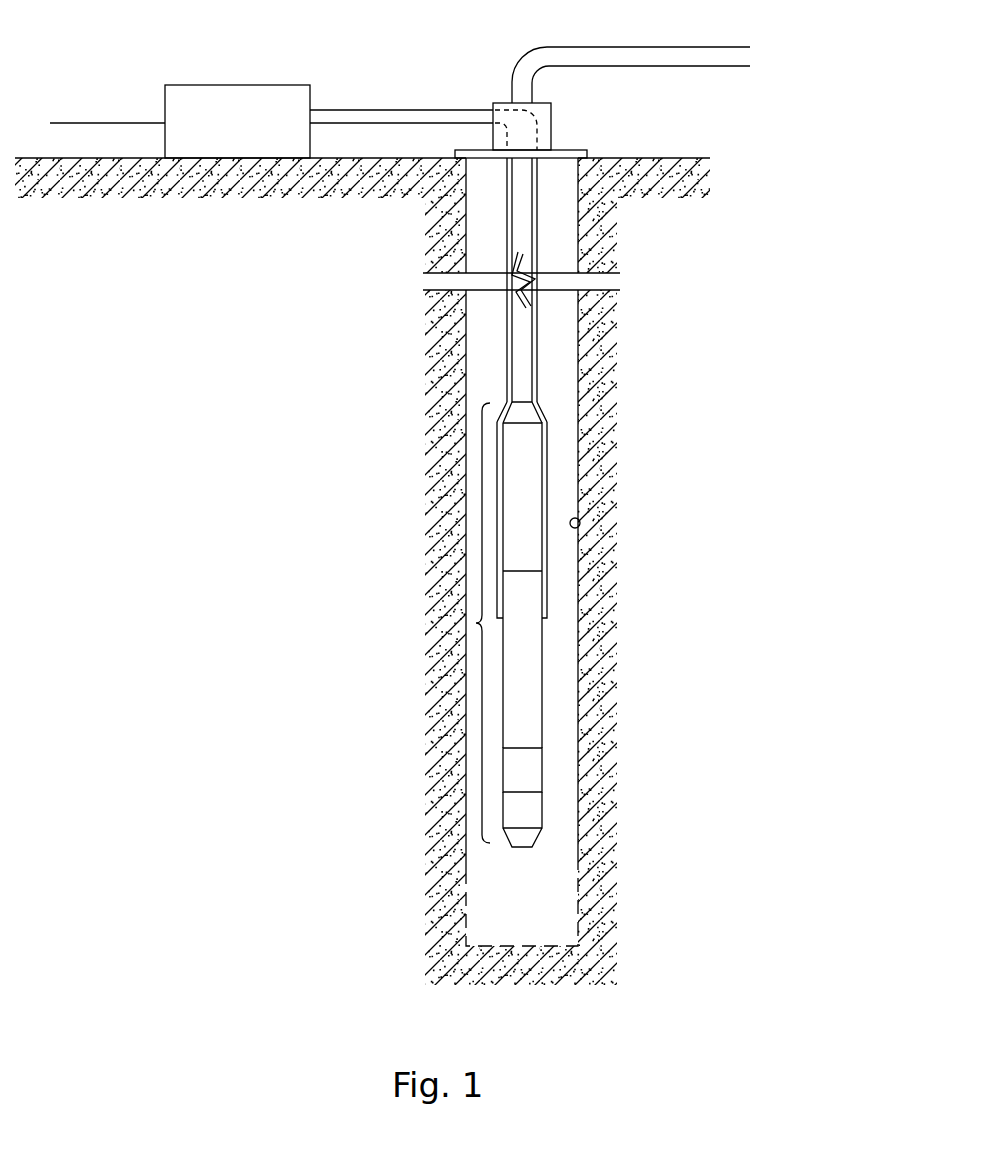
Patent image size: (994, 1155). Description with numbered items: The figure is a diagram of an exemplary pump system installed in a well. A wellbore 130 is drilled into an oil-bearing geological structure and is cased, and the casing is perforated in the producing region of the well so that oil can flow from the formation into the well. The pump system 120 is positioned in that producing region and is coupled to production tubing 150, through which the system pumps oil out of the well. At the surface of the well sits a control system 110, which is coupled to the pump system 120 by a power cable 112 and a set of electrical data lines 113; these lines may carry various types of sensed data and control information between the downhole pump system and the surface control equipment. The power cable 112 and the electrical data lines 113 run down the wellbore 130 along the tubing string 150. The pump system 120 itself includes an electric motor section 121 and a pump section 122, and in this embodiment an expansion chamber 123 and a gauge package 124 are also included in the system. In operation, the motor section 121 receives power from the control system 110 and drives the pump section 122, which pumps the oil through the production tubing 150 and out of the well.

The control system 110 is at (239, 85).
The power cable 112 is at (394, 118).
The electrical data lines 113 is at (447, 110).
The pump system 120 is at (476, 623).
The electric motor section 121 is at (542, 660).
The pump section 122 is at (542, 441).
The expansion chamber 123 is at (542, 772).
The gauge package 124 is at (542, 815).
The wellbore 130 is at (579, 527).
The production tubing 150 is at (532, 355).